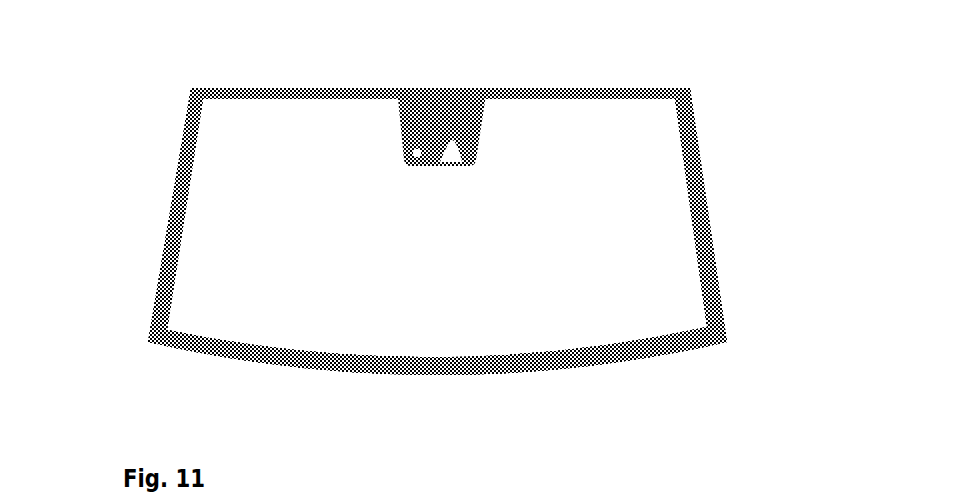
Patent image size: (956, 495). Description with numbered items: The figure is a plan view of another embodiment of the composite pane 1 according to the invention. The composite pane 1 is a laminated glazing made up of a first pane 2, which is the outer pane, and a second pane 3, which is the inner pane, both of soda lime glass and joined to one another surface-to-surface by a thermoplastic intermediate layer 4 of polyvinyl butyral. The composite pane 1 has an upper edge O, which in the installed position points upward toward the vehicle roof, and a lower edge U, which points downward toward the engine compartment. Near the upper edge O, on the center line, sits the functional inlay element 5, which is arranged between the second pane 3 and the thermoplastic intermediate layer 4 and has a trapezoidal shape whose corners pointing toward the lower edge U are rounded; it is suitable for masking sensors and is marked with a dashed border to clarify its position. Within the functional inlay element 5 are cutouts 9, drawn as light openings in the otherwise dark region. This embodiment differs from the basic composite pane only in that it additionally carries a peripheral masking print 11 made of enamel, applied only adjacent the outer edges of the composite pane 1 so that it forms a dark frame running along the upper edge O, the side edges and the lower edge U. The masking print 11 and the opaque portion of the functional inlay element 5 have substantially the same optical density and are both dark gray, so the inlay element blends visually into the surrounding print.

The composite pane 1 is at (166, 113).
The first pane 2 is at (668, 175).
The second pane 3 is at (437, 231).
The thermoplastic intermediate layer 4 is at (437, 231).
The functional inlay element 5 is at (468, 92).
The cutout 9 is at (416, 150).
The masking print 11 is at (575, 365).
The upper edge O is at (237, 84).
The lower edge U is at (229, 364).